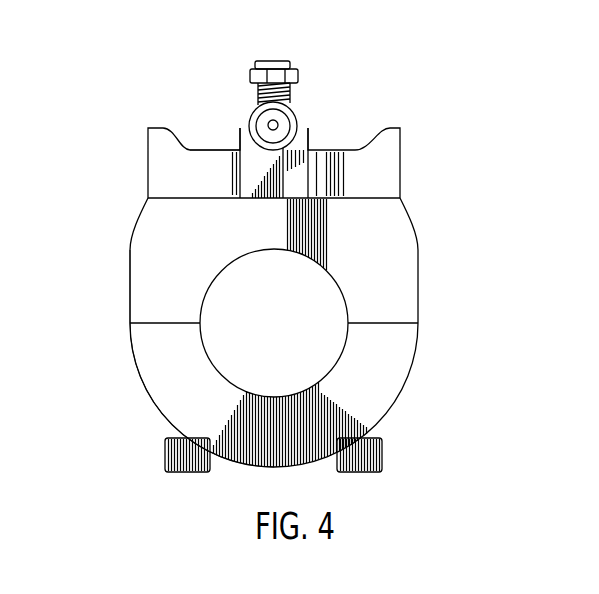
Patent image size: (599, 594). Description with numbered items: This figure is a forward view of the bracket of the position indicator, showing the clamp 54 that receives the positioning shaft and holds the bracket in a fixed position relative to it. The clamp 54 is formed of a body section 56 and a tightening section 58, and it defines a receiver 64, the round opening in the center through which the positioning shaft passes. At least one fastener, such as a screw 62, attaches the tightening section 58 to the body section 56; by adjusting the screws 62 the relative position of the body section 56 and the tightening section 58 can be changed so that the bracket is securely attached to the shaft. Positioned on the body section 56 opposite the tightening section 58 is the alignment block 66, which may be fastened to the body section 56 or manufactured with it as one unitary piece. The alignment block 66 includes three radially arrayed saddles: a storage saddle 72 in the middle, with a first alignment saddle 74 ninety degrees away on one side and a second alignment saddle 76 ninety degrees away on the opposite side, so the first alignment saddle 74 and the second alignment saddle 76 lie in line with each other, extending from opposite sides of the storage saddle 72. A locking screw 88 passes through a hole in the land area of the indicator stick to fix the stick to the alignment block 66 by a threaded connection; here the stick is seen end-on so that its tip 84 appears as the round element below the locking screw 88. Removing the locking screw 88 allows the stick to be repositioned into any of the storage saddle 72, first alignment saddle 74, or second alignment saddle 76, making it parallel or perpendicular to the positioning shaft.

The clamp 54 is at (405, 268).
The body section 56 is at (147, 281).
The tightening section 58 is at (156, 384).
The screw 62 is at (165, 458).
The receiver 64 is at (343, 355).
The alignment block 66 is at (203, 150).
The storage saddle 72 is at (312, 133).
The first alignment saddle 74 is at (158, 128).
The second alignment saddle 76 is at (390, 160).
The tip 84 is at (281, 122).
The locking screw 88 is at (292, 72).